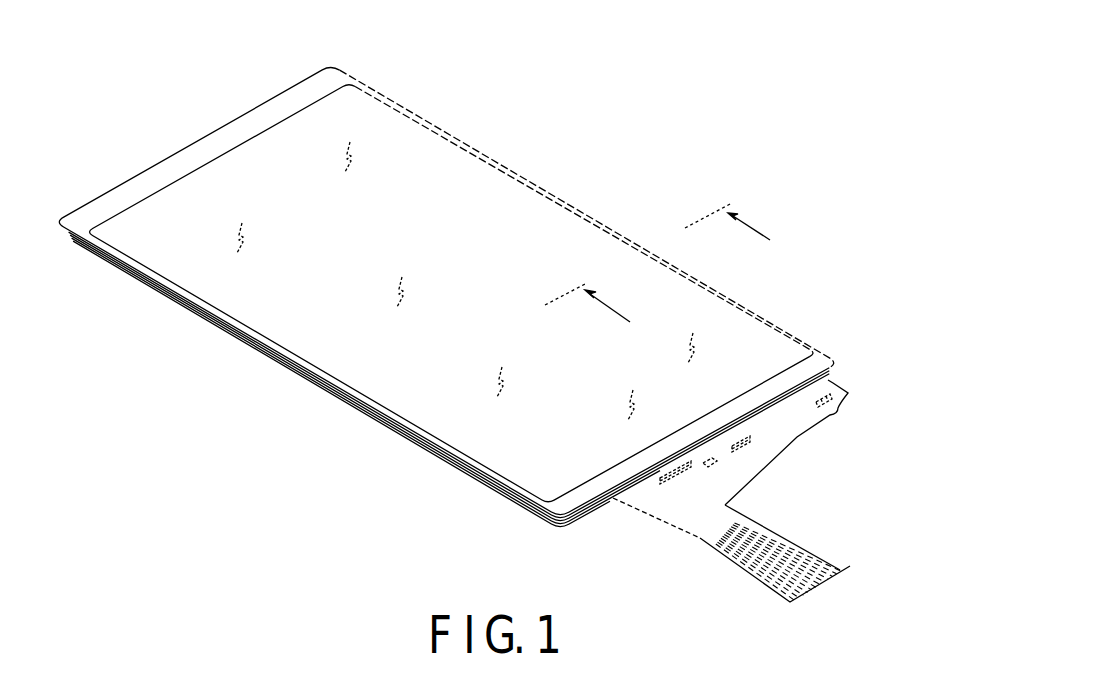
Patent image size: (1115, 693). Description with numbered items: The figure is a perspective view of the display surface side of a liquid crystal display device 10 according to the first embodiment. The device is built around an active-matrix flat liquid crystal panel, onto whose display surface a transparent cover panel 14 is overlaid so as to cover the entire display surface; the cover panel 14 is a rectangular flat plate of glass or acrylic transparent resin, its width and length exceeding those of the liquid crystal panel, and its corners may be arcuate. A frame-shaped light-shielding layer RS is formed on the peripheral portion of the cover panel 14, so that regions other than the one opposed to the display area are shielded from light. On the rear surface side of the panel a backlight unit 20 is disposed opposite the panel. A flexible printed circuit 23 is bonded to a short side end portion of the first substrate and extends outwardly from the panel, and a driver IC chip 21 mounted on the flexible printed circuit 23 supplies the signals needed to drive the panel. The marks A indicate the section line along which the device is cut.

The liquid crystal display device 10 is at (435, 73).
The cover panel 14 is at (450, 180).
The backlight unit 20 is at (457, 475).
The driver IC chip 21 is at (675, 492).
The flexible printed circuit 23 is at (707, 530).
The light-shielding layer RS is at (110, 202).
The section line A- A is at (650, 255).